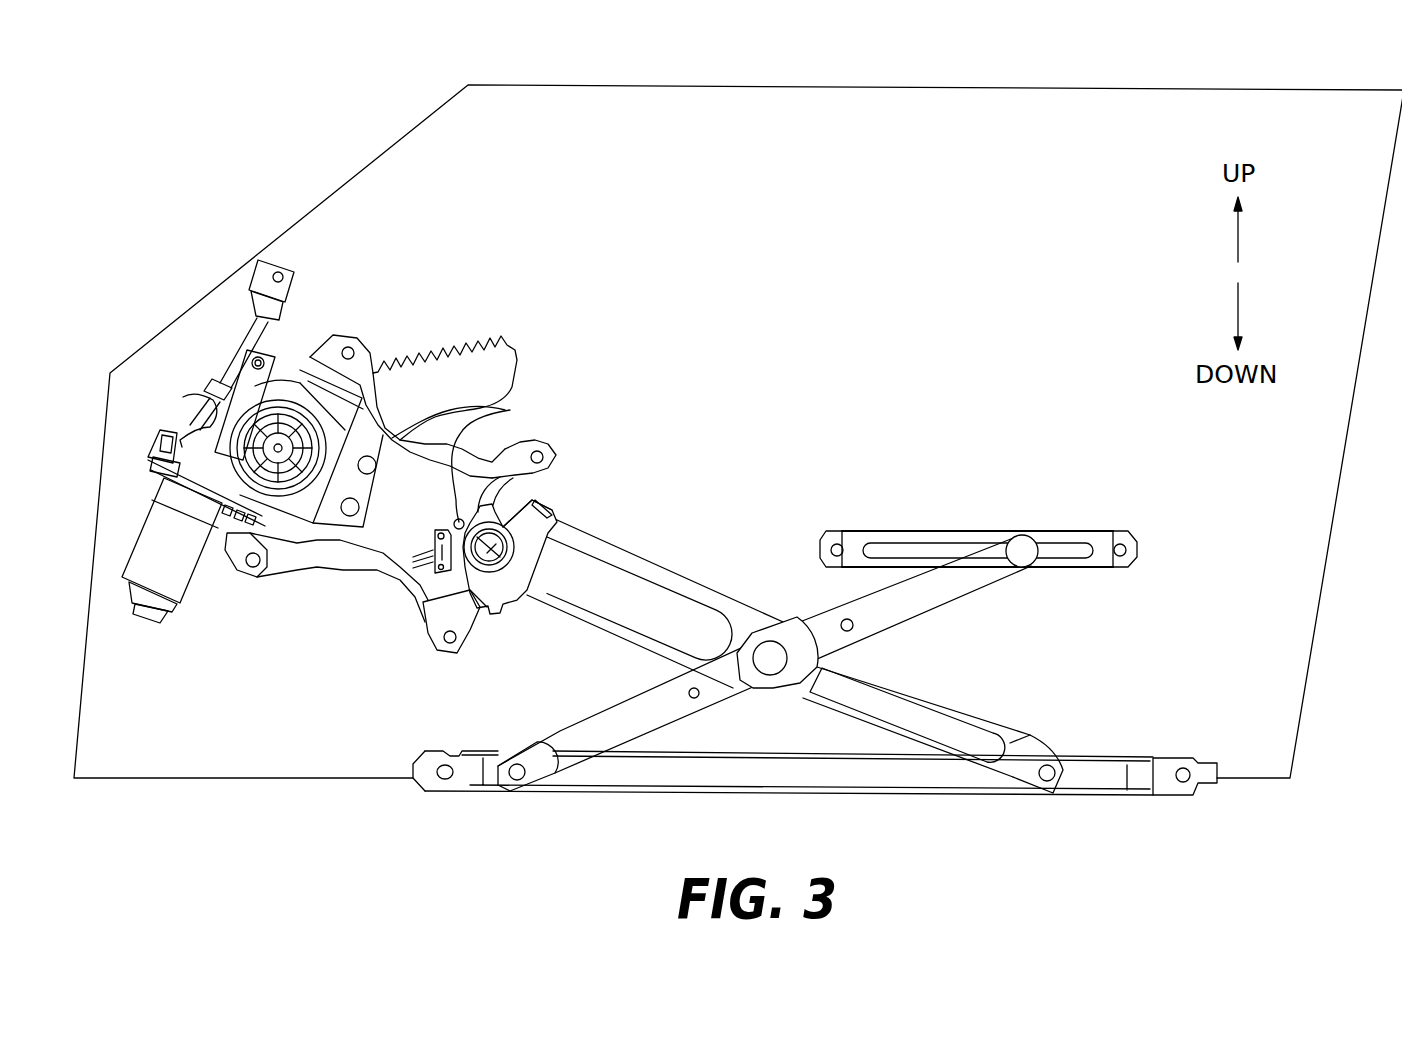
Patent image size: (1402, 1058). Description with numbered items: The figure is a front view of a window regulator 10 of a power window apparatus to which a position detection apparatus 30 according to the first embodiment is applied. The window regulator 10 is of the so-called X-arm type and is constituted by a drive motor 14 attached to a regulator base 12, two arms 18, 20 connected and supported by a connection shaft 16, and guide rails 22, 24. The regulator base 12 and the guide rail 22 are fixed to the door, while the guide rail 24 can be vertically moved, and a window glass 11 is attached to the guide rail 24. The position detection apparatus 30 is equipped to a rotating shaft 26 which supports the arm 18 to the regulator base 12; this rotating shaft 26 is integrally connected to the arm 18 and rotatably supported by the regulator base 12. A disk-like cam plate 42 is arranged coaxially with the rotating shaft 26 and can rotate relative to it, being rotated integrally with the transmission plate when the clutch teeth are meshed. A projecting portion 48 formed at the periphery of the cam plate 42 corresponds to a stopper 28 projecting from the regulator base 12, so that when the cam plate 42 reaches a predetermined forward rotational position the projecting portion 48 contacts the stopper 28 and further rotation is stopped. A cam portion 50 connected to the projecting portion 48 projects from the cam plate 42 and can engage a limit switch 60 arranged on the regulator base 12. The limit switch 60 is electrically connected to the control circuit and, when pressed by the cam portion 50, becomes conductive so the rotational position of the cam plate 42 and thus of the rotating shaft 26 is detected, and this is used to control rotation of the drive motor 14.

The window regulator 10 is at (1078, 806).
The window glass 11 is at (1258, 709).
The regulator base 12 is at (403, 600).
The drive motor 14 is at (202, 590).
The connection shaft 16 is at (771, 648).
The arm 18 is at (698, 582).
The arm 20 is at (573, 723).
The guide rail 22 is at (953, 531).
The guide rail 24 is at (677, 796).
The rotating shaft 26 is at (498, 557).
The stopper 28 is at (468, 463).
The position detection apparatus 30 is at (521, 555).
The cam plate 42 is at (560, 505).
The projecting portion 48 is at (552, 512).
The cam portion 50 is at (532, 485).
The limit switch 60 is at (437, 592).